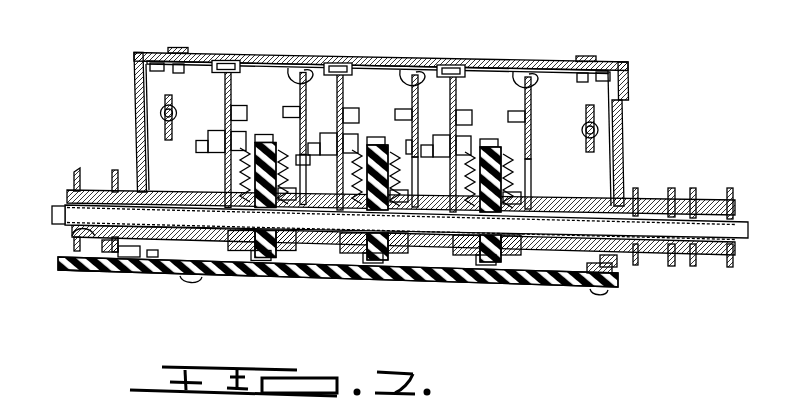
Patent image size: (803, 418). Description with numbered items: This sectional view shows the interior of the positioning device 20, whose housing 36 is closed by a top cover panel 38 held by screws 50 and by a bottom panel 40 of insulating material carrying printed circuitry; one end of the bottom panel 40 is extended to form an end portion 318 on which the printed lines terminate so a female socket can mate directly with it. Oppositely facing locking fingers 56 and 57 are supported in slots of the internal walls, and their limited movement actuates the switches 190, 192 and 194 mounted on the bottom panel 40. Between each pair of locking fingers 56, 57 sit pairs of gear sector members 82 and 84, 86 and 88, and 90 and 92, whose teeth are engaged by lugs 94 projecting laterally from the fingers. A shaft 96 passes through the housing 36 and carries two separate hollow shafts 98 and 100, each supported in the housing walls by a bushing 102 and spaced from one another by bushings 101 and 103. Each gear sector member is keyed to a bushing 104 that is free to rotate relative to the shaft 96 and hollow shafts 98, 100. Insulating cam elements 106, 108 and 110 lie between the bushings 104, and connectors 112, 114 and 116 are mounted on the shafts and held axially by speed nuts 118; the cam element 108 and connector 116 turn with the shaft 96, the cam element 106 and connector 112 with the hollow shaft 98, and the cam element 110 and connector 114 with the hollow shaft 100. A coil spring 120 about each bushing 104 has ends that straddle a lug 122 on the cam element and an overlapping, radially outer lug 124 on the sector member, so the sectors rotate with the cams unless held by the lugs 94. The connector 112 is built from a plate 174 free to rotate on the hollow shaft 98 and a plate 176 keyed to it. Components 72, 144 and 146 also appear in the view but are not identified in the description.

The positioning device 20 is at (632, 63).
The housing 36 is at (137, 108).
The top cover panel 38 is at (455, 72).
The bottom panel 40 is at (210, 278).
The screws 50 is at (184, 49).
The locking fingers 56 is at (226, 99).
The locking fingers 57 is at (347, 105).
The hook member 72 is at (300, 68).
The gear sector member 82 is at (527, 128).
The gear sector member 84 is at (463, 133).
The gear sector member 86 is at (406, 140).
The gear sector member 88 is at (343, 110).
The gear sector member 90 is at (293, 160).
The gear sector member 92 is at (230, 148).
The lugs 94 is at (233, 100).
The shaft 96 is at (52, 215).
The hollow shaft 98 is at (68, 232).
The hollow shaft 100 is at (534, 218).
The bushing 101 is at (310, 208).
The bushing 102 is at (148, 190).
The bushing 103 is at (305, 263).
The bushings 104 is at (238, 212).
The cam element 106 is at (261, 263).
The cam element 108 is at (356, 264).
The cam element 110 is at (524, 186).
The connector 112 is at (73, 174).
The connector 114 is at (654, 190).
The connector 116 is at (698, 192).
The speed nuts 118 is at (72, 190).
The coil spring 120 is at (290, 276).
The lug 122 is at (242, 172).
The lug 124 is at (266, 144).
The right lever 144 is at (597, 117).
The left lever 146 is at (165, 102).
The plate 174 is at (75, 170).
The plate 176 is at (108, 260).
The switch 190 is at (212, 141).
The switch 192 is at (326, 132).
The switch 194 is at (423, 157).
The extended portion 318 is at (90, 276).